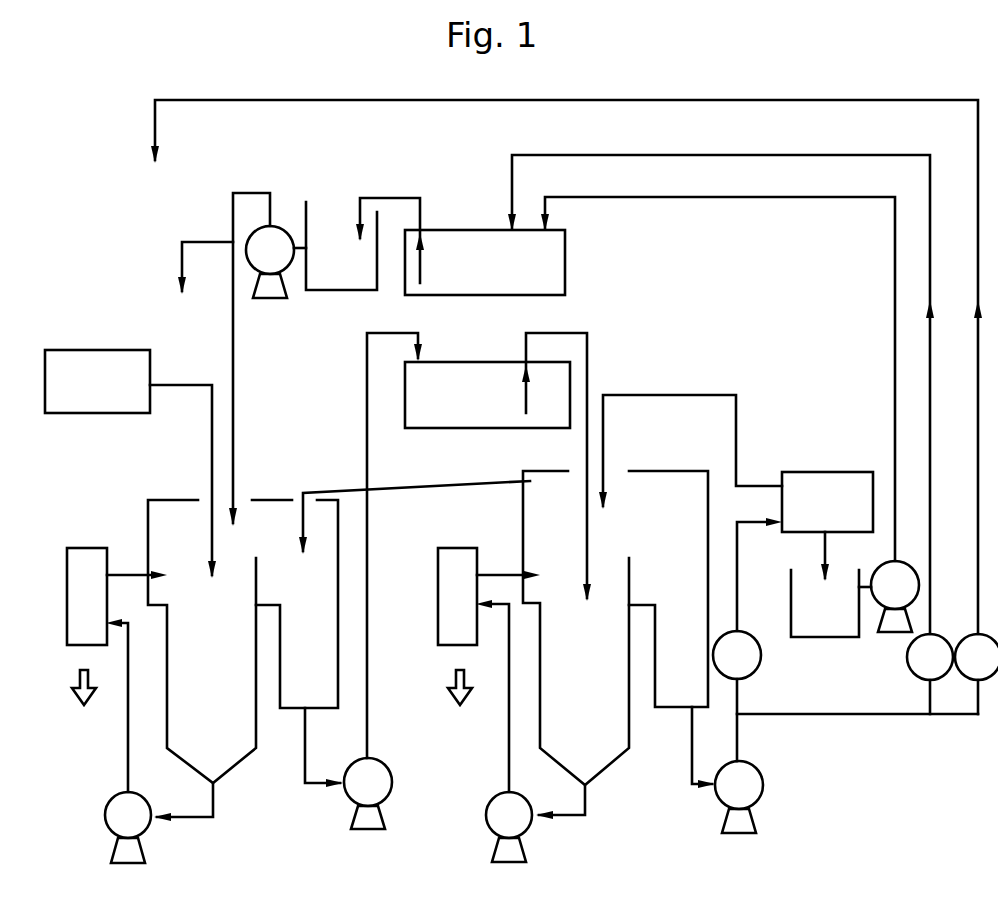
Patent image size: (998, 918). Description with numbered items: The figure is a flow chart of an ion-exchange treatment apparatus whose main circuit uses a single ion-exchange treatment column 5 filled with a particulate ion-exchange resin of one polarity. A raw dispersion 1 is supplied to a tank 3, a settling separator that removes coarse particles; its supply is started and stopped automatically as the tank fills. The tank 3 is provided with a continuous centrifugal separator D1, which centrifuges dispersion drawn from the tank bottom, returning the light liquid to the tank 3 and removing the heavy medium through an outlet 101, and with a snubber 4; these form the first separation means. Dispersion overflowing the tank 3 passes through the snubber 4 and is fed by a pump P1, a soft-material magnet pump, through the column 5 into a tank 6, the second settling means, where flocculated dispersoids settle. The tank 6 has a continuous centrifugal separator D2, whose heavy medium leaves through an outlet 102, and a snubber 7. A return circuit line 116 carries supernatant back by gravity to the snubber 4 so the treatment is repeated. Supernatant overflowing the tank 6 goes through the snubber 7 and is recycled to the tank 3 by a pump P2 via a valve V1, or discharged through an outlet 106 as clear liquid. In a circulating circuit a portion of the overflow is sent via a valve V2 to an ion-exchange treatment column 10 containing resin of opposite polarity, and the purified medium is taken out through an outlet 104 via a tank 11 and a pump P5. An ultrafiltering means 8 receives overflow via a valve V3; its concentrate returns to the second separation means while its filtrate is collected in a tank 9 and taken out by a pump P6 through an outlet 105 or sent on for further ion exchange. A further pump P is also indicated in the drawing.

The raw dispersion 1 is at (102, 396).
The tank 3 is at (219, 728).
The snubber 4 is at (311, 674).
The ion-exchange treatment column 5 is at (491, 406).
The tank 6 is at (589, 728).
The snubber 7 is at (689, 669).
The ultrafiltering means 8 is at (832, 513).
The tank 9 is at (831, 618).
The ion-exchange treatment column 10 is at (492, 276).
The tank 11 is at (350, 274).
The outlet 101 is at (84, 708).
The outlet 102 is at (463, 708).
The outlet 104 is at (200, 283).
The outlet 105 is at (718, 379).
The outlet 106 is at (562, 367).
The return circuit line 116 is at (414, 507).
The circulation pump P is at (128, 741).
The pump P1 is at (368, 793).
The pump P2 is at (739, 797).
The pump P5 is at (267, 359).
The pump P6 is at (895, 596).
The continuous centrifugal separator D1 is at (117, 596).
The continuous centrifugal separator D2 is at (489, 596).
The valve V1 is at (976, 674).
The valve V2 is at (930, 674).
The valve V3 is at (845, 639).